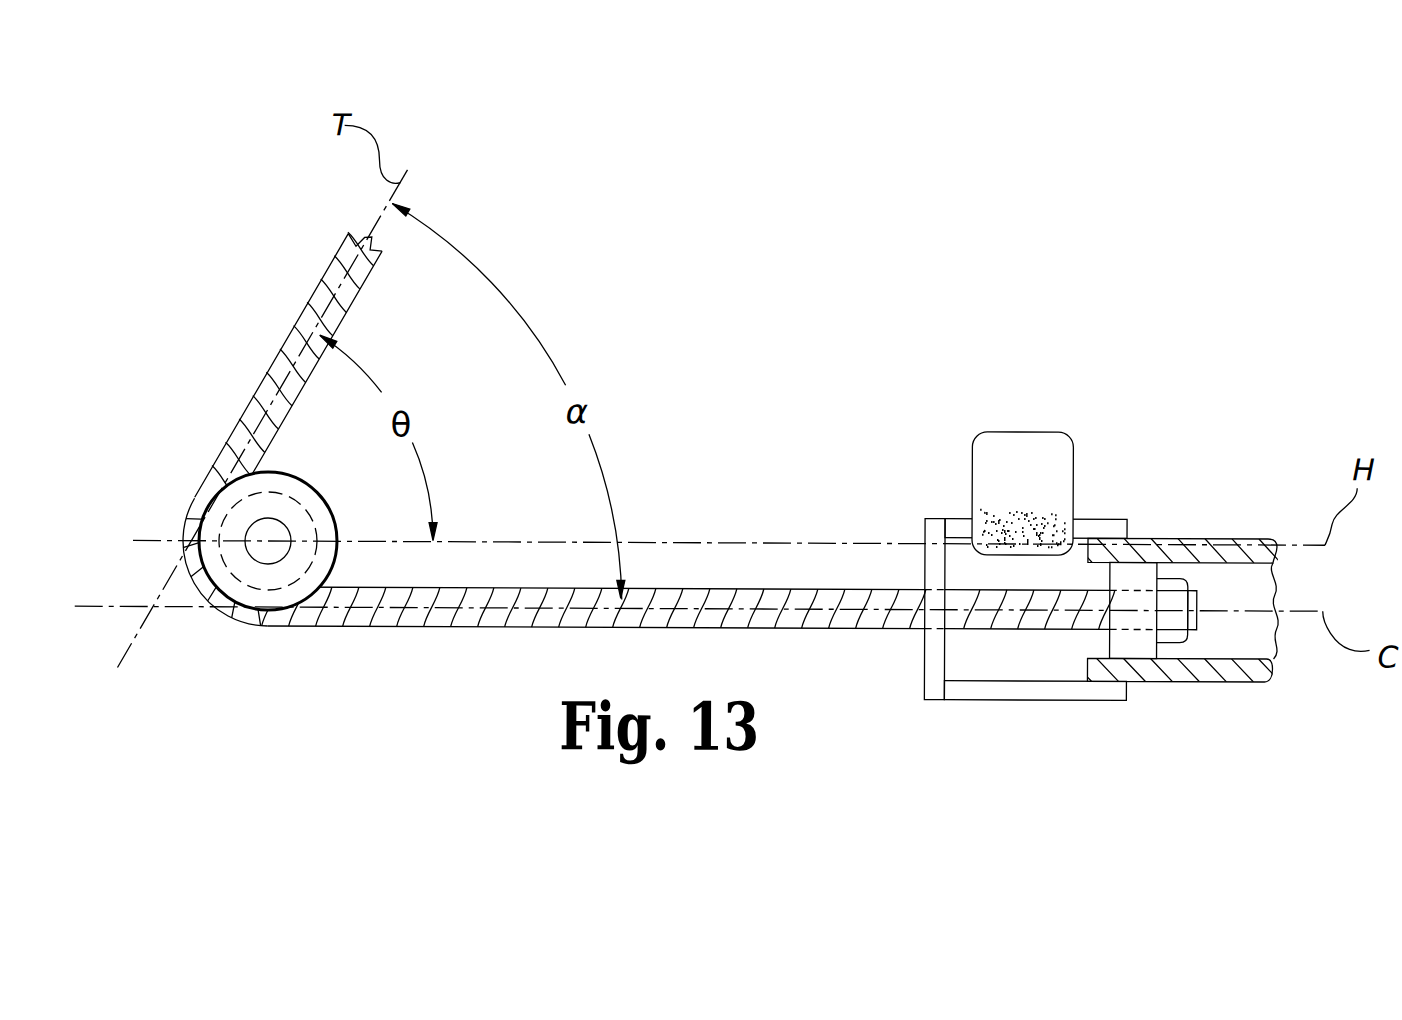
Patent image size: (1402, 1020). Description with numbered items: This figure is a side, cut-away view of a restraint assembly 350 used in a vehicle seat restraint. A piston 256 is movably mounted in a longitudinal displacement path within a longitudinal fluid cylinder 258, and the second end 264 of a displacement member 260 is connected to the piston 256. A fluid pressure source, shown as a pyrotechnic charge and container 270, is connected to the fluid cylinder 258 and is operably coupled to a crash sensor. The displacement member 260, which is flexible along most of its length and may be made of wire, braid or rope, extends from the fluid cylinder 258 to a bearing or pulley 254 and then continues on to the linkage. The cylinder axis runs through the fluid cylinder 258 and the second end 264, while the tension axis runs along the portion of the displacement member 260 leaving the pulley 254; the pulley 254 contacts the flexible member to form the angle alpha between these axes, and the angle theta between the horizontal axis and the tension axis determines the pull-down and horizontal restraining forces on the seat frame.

The bearing or pulley 254 is at (228, 580).
The piston 256 is at (1138, 640).
The longitudinal fluid cylinder 258 is at (1232, 636).
The displacement member 260 is at (494, 633).
The second end 264 is at (1177, 583).
The pyrotechnic charge and container 270 is at (990, 440).
The cable tensioning assembly 350 is at (847, 260).